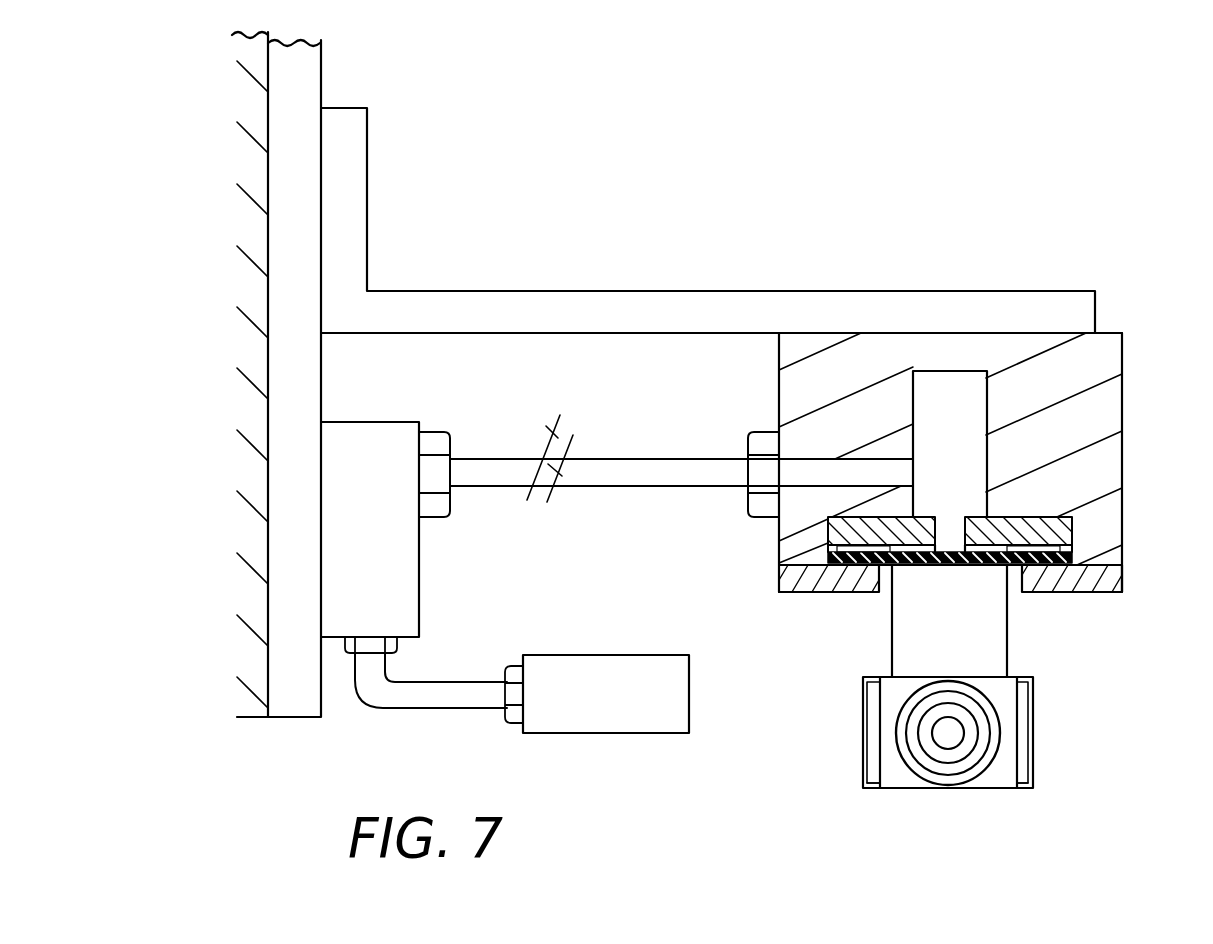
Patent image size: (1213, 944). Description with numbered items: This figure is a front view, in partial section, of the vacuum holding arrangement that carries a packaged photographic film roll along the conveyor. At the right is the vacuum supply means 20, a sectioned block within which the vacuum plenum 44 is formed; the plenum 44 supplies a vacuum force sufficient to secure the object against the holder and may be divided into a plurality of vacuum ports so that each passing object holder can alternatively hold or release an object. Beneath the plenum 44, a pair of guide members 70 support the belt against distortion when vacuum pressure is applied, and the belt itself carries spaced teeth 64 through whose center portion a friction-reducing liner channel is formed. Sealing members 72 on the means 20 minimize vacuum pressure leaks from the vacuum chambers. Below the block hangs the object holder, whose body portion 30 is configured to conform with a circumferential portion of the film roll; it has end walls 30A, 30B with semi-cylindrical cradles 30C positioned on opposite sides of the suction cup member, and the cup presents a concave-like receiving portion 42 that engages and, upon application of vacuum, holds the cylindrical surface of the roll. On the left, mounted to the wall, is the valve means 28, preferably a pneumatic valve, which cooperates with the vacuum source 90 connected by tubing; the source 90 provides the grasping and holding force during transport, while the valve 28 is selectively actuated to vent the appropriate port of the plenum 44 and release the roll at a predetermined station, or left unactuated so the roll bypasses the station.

The vacuum supply means 20 is at (1097, 407).
The valve means 28 is at (462, 543).
The body portion 30 is at (1007, 640).
The end wall 30A is at (863, 697).
The end wall 30B is at (1033, 697).
The semi-cylindrical cradles 30C is at (1088, 785).
The concave-like receiving portion 42 is at (982, 733).
The vacuum plenum 44 is at (971, 410).
The spaced teeth 64 is at (1075, 553).
The guide members 70 is at (1075, 525).
The sealing members 72 is at (1078, 613).
The vacuum source 90 is at (689, 683).